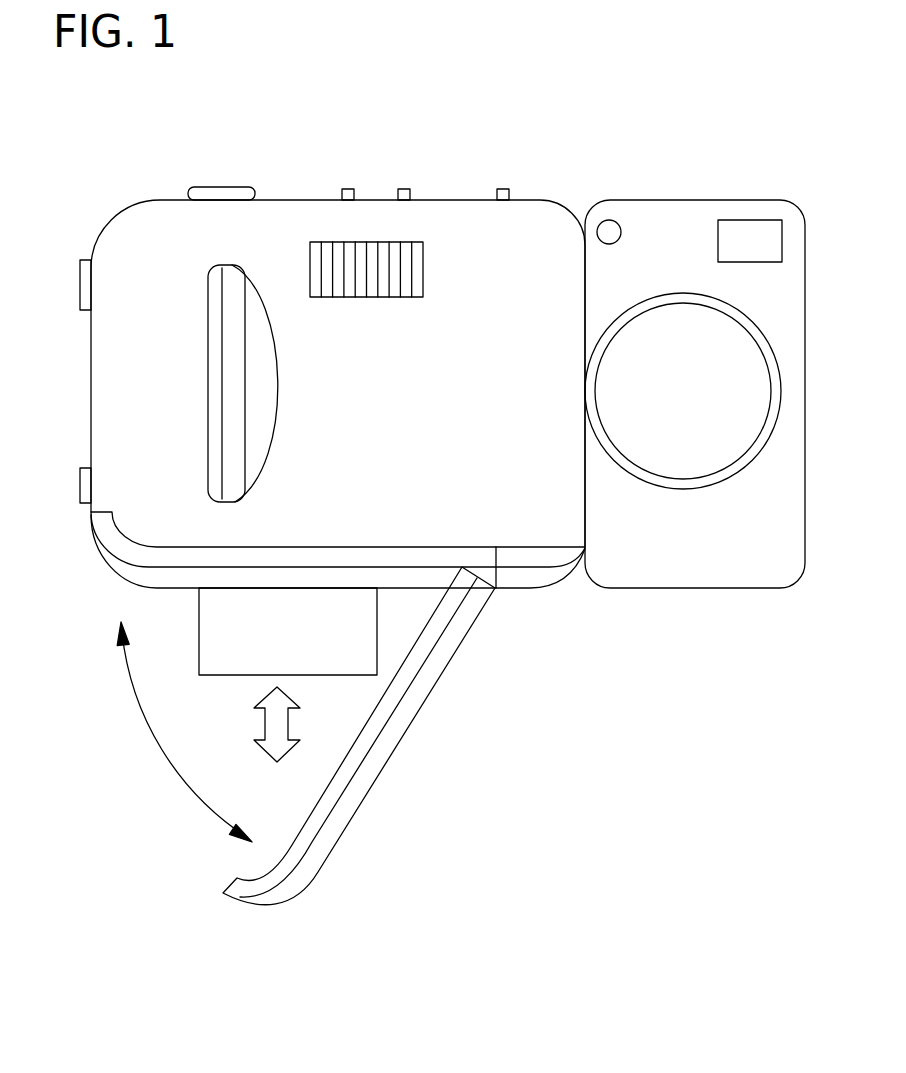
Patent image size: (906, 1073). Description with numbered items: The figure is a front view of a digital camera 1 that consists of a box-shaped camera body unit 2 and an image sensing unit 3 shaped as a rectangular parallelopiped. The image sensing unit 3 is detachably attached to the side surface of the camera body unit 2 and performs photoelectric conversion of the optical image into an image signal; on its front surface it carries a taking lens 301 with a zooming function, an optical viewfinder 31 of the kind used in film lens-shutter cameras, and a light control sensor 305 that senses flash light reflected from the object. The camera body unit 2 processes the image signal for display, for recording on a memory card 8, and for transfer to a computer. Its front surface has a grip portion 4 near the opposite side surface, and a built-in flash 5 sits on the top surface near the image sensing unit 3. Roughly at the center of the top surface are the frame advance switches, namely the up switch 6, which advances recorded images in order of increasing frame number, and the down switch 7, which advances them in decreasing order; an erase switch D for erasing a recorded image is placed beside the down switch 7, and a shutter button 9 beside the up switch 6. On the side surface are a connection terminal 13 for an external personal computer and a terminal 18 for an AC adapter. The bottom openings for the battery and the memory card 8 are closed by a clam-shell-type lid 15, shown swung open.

The digital camera 1 is at (245, 80).
The camera body unit 2 is at (298, 200).
The image sensing unit 3 is at (675, 200).
The grip portion 4 is at (262, 410).
The built-in flash 5 is at (348, 284).
The up switch 6 is at (349, 189).
The down switch 7 is at (405, 189).
The erase switch D is at (503, 189).
The memory card 8 is at (199, 617).
The shutter button 9 is at (218, 187).
The connection terminal 13 is at (84, 290).
The clam-shell-type lid 15 is at (377, 776).
The terminal 18 is at (84, 483).
The optical viewfinder 31 is at (740, 220).
The taking lens 301 is at (752, 394).
The light control sensor 305 is at (609, 221).